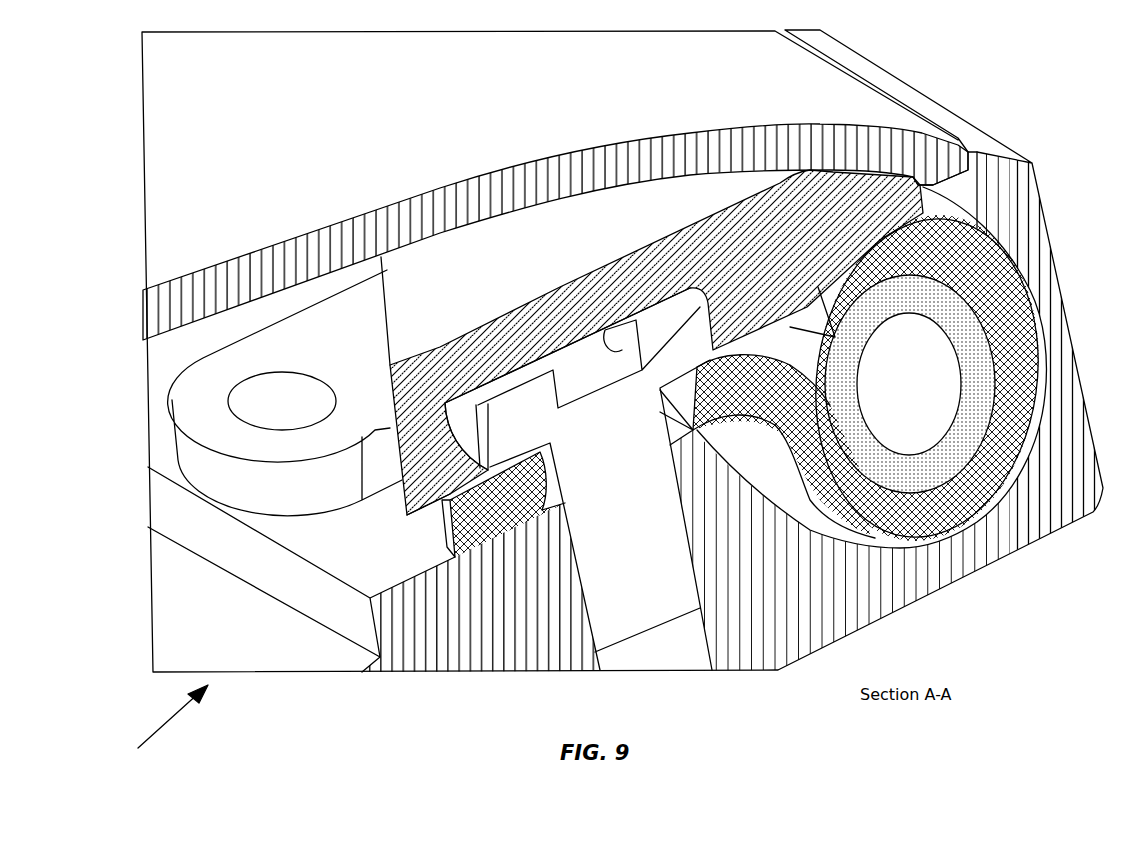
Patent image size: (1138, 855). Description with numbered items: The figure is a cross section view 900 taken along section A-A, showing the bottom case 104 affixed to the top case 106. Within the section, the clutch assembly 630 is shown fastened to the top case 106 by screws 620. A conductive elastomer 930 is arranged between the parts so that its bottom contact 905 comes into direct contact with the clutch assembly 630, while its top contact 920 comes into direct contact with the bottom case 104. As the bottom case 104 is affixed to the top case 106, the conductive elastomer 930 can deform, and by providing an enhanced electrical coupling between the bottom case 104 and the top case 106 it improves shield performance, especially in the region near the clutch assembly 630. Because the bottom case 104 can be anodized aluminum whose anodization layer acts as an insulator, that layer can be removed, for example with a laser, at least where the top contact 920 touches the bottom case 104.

The bottom case 104 is at (485, 98).
The top case 106 is at (1045, 533).
The cross section view 900 is at (156, 728).
The bottom contact 905 is at (893, 220).
The top contact 920 is at (870, 160).
The conductive elastomer 930 is at (913, 178).
The screws 620 is at (650, 630).
The clutch assembly 630 is at (960, 527).